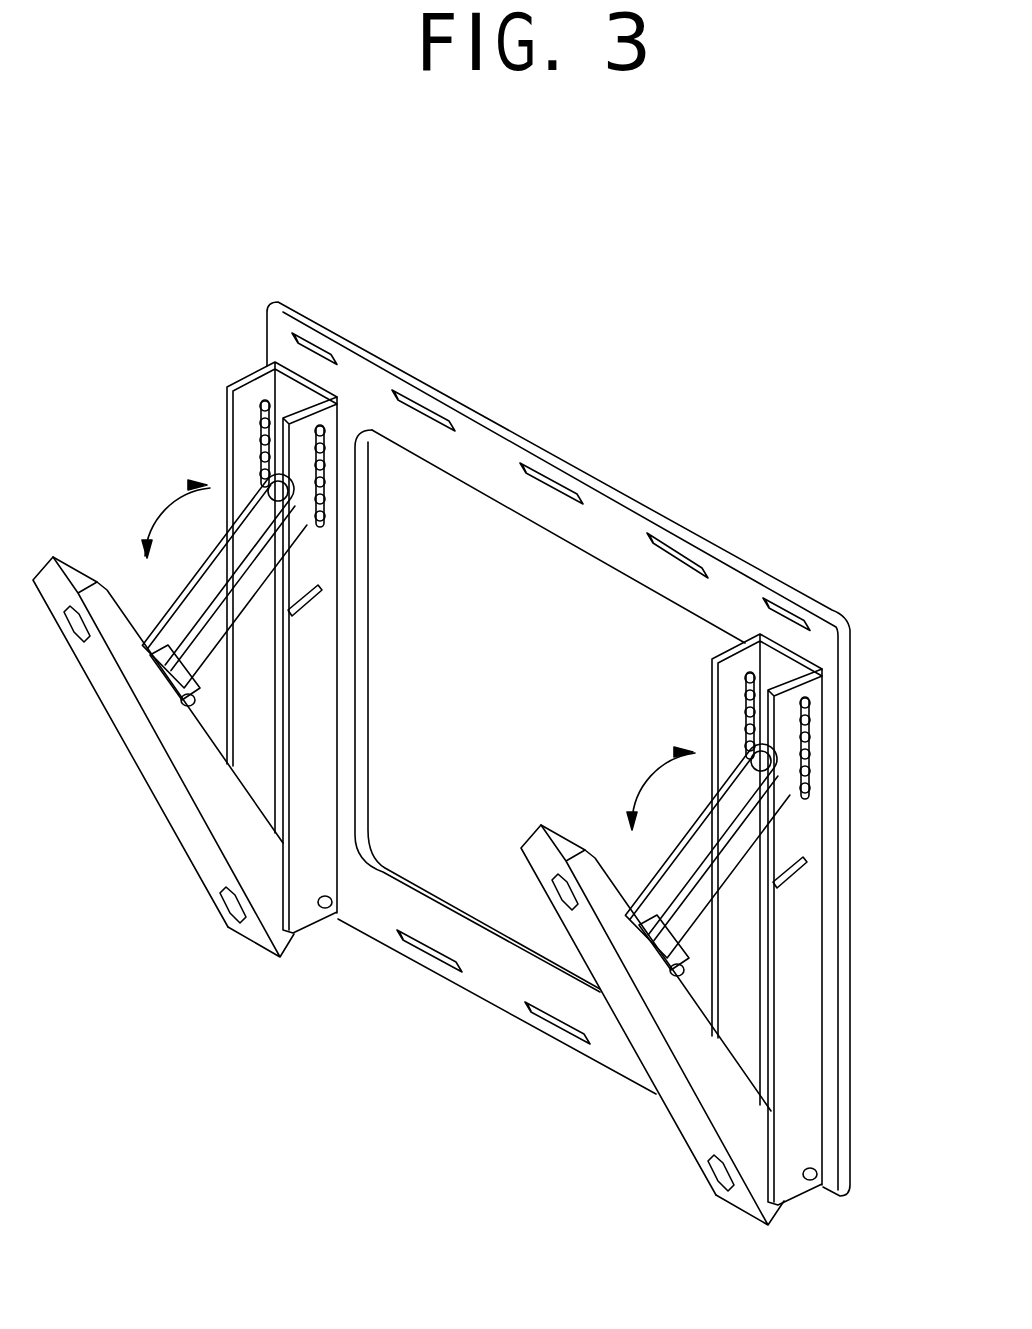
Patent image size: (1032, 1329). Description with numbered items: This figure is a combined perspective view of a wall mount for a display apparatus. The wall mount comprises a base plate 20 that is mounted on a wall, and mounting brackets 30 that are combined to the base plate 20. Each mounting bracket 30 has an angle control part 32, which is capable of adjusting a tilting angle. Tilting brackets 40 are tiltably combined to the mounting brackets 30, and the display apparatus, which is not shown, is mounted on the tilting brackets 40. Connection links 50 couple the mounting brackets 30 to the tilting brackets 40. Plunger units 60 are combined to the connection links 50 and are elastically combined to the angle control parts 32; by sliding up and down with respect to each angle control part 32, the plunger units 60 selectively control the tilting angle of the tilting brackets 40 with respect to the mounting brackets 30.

The base plate 20 is at (601, 461).
The mounting bracket 30 is at (833, 920).
The angle control part 32 is at (810, 737).
The tilting bracket 40 is at (661, 1106).
The connection link 50 is at (779, 824).
The plunger unit 60 is at (736, 756).